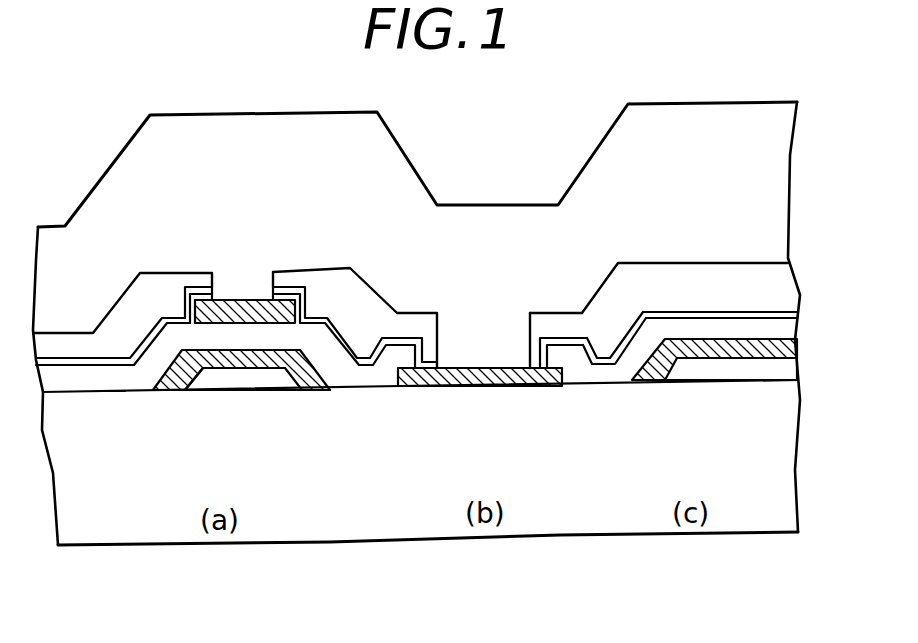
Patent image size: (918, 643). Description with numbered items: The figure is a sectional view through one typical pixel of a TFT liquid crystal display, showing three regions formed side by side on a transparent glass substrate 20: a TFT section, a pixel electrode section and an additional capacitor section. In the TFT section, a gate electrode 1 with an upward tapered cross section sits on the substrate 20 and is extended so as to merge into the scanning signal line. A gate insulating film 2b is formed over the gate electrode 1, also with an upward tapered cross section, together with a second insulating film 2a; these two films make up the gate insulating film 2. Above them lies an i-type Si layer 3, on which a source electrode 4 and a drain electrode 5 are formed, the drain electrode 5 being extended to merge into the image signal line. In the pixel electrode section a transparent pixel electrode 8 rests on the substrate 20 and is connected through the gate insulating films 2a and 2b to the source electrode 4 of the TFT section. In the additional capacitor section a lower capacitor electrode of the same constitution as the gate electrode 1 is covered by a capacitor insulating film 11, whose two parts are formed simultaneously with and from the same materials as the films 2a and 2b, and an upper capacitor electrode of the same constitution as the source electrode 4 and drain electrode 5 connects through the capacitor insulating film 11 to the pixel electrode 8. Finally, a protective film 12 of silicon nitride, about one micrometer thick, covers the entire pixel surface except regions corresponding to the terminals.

The gate electrode 1 is at (260, 390).
The gate insulating film 2 is at (190, 438).
The second gate insulating film 2a is at (112, 392).
The gate insulating film 2b is at (163, 392).
The i-type Si layer 3 is at (238, 306).
The source electrode 4 is at (363, 293).
The drain electrode 5 is at (187, 275).
The transparent pixel electrode 8 is at (475, 368).
The capacitor insulating film 11 is at (665, 433).
The protective film 12 is at (498, 215).
The transparent glass substrate 20 is at (362, 523).